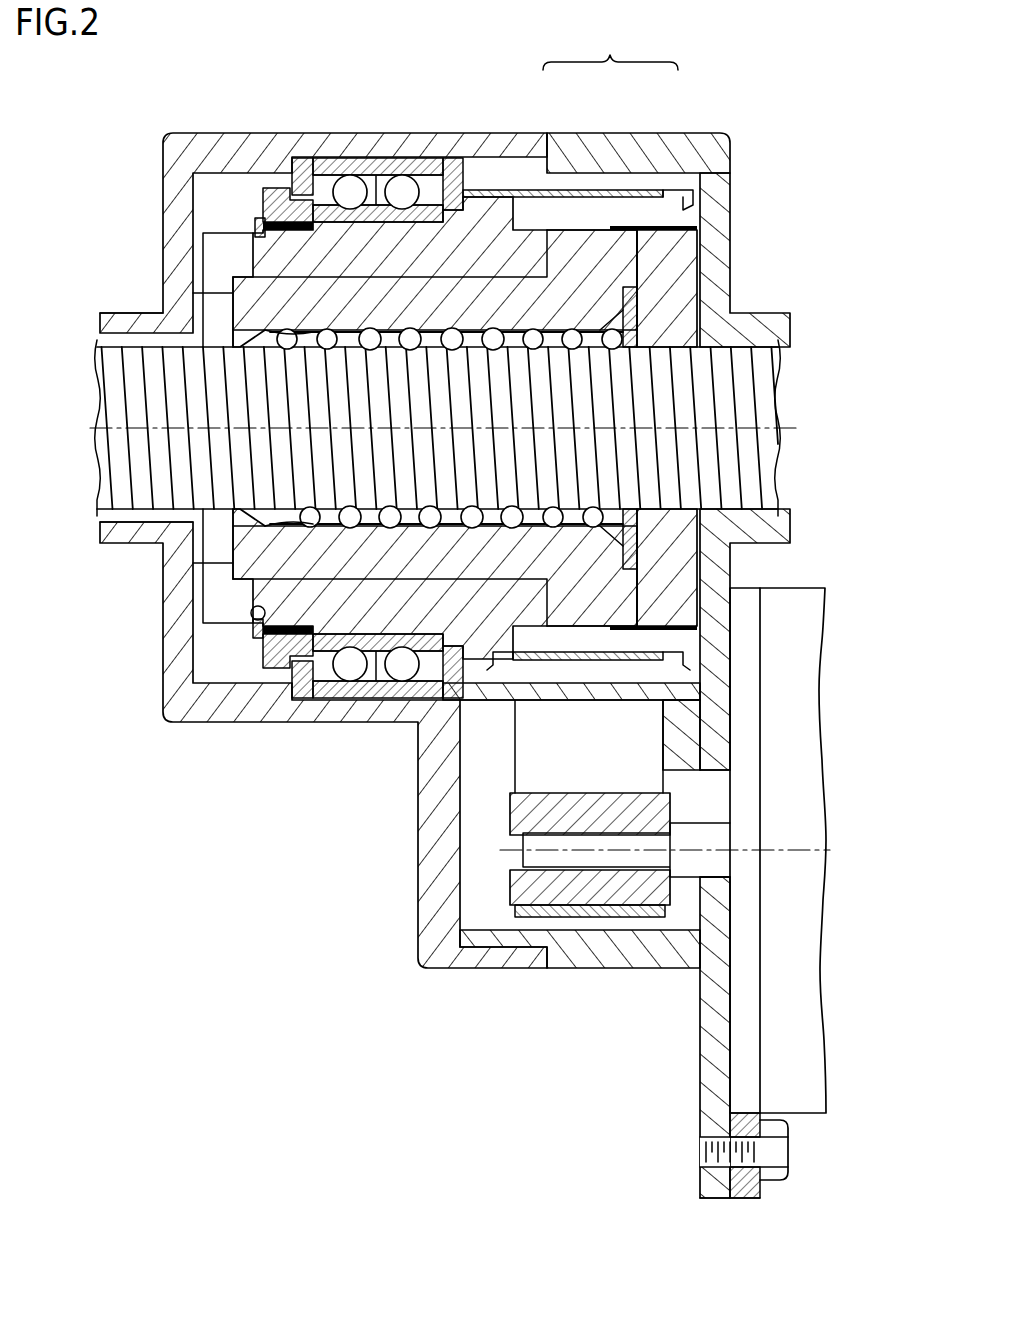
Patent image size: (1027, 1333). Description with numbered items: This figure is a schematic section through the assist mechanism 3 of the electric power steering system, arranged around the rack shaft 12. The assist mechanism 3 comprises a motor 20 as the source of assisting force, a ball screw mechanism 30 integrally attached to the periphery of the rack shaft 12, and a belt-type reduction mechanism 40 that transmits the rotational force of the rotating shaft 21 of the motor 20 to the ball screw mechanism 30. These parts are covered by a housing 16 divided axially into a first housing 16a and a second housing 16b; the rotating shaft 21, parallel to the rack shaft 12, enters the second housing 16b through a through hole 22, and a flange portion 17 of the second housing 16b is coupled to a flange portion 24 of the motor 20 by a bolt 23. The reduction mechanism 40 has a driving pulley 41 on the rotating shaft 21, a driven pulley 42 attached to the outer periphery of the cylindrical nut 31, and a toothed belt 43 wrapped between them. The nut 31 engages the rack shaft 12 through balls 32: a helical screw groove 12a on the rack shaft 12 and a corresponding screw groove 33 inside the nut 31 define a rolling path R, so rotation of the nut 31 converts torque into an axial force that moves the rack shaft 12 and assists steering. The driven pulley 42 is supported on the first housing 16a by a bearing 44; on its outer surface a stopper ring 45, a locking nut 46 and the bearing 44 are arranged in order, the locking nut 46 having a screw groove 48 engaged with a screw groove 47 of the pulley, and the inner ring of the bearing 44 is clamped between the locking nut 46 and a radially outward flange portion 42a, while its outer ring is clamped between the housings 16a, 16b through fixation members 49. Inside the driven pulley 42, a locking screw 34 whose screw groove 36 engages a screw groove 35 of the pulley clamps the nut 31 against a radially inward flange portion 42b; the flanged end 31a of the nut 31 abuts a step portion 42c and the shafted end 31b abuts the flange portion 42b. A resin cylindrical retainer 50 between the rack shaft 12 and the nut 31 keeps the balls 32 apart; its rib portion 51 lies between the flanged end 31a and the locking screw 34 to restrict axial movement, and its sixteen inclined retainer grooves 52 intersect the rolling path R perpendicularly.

The assist mechanism 3 is at (380, 976).
The rack shaft 12 is at (100, 351).
The helical screw groove 12a is at (115, 330).
The housing 16 is at (610, 49).
The first housing 16a is at (513, 133).
The second housing 16b is at (640, 133).
The flange portion 17 is at (714, 1198).
The motor 20 is at (807, 1126).
The rotating shaft 21 is at (717, 863).
The through hole 22 is at (735, 790).
The bolt 23 is at (776, 1182).
The flange portion 24 is at (748, 1198).
The ball screw mechanism 30 is at (370, 375).
The nut 31 is at (250, 267).
The flanged end 31a is at (557, 253).
The shafted end 31b is at (235, 600).
The balls 32 is at (407, 340).
The helical screw groove 33 is at (458, 330).
The locking screw 34 is at (672, 273).
The screw groove 35 is at (672, 240).
The screw groove 36 is at (663, 218).
The belt-type reduction mechanism 40 is at (519, 855).
The driving pulley 41 is at (510, 870).
The driven pulley 42 is at (460, 504).
The flange portion 42a is at (690, 655).
The flange portion 42b is at (218, 283).
The step portion 42c is at (548, 600).
The belt 43 is at (647, 727).
The bearing 44 is at (378, 157).
The stopper ring 45 is at (277, 637).
The locking nut 46 is at (265, 695).
The screw groove 47 is at (258, 620).
The screw groove 48 is at (303, 630).
The fixation members 49 is at (302, 695).
The retainer 50 is at (645, 437).
The rib portion 51 is at (640, 320).
The retainer grooves 52 is at (513, 528).
The rolling path R is at (356, 347).